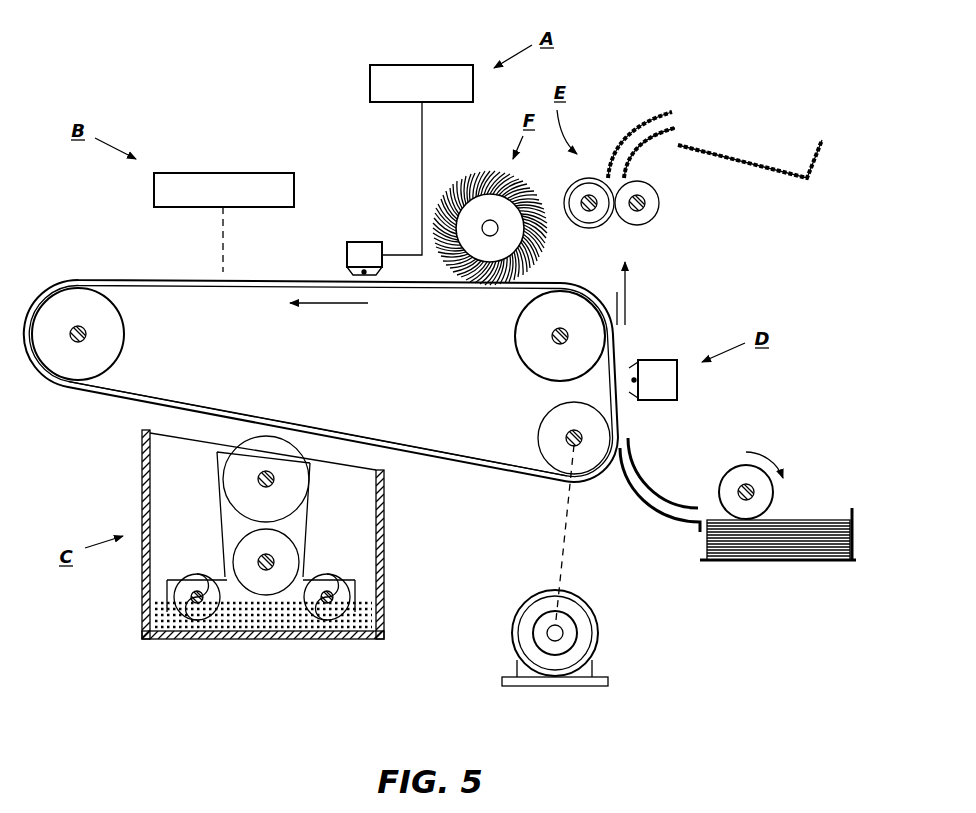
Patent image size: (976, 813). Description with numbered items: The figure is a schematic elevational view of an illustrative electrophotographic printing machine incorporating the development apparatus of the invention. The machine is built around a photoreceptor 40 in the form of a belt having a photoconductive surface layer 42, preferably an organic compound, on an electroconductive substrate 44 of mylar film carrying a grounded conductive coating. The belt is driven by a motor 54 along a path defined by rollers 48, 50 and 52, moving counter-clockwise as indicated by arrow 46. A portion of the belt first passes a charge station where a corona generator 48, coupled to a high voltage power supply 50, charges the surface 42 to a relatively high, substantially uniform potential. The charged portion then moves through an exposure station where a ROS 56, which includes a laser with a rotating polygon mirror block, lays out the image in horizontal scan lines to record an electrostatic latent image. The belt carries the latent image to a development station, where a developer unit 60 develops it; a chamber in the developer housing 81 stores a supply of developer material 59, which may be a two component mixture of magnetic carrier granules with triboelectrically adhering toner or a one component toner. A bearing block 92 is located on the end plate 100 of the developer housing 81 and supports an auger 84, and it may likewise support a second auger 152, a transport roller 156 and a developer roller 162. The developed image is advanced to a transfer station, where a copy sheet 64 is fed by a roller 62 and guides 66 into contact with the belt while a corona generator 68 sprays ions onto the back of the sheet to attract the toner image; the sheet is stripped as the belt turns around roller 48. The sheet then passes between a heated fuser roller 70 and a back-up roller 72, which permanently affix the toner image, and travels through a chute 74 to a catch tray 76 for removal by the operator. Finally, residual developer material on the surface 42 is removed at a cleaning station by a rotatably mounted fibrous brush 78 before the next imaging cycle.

The photoreceptor 40 is at (448, 311).
The photoconductive surface layer 42 is at (500, 470).
The electroconductive substrate 44 is at (200, 405).
The arrow 46 is at (330, 305).
The corona generator 48 is at (525, 345).
The high voltage power supply 50 is at (117, 336).
The roller 52 is at (540, 440).
The motor 54 is at (612, 632).
The ROS 56 is at (287, 182).
The developer material 59 is at (248, 617).
The developer unit 60 is at (219, 534).
The roller 62 is at (760, 478).
The copy sheet 64 is at (770, 548).
The guides 66 is at (657, 491).
The corona generator 68 is at (678, 380).
The fuser roller 70 is at (586, 220).
The back-up roller 72 is at (649, 200).
The chute 74 is at (660, 112).
The catch tray 76 is at (750, 165).
The fibrous brush 78 is at (485, 187).
The developer housing 81 is at (386, 589).
The auger 84 is at (337, 605).
The bearing block 92 is at (229, 521).
The end plate 100 is at (167, 470).
The second auger 152 is at (193, 610).
The transport roller 156 is at (277, 580).
The developer roller 162 is at (292, 498).